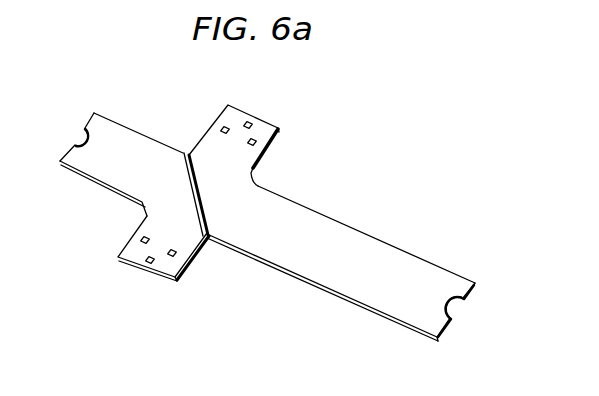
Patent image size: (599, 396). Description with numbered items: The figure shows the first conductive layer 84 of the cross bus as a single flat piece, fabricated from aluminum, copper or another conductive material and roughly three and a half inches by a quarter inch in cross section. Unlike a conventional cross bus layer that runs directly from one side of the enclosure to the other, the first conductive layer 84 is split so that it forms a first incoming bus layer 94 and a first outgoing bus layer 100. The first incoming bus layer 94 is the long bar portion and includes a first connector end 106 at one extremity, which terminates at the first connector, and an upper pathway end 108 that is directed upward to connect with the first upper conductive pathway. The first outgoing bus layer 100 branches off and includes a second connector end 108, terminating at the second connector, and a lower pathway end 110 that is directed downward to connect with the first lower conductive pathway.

The first conductive layer 84 is at (466, 260).
The first incoming bus layer 94 is at (360, 240).
The first outgoing bus layer 100 is at (98, 182).
The first connector end 106 is at (446, 336).
The upper pathway end 108 is at (88, 124).
The lower pathway end 110 is at (150, 270).